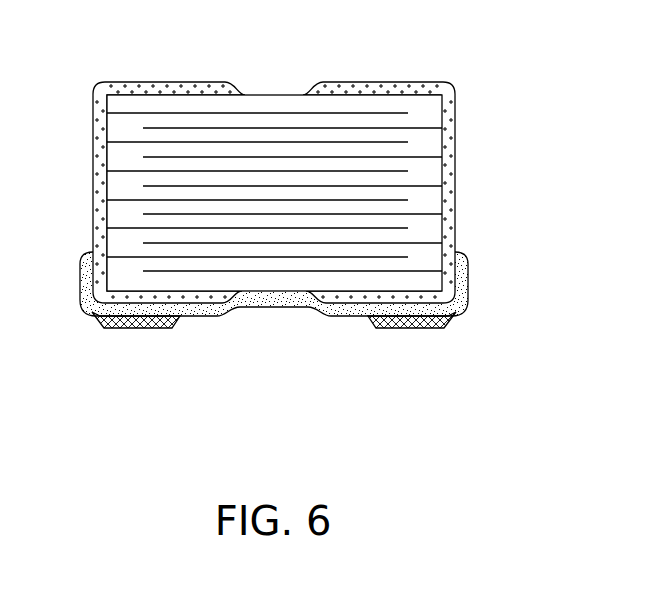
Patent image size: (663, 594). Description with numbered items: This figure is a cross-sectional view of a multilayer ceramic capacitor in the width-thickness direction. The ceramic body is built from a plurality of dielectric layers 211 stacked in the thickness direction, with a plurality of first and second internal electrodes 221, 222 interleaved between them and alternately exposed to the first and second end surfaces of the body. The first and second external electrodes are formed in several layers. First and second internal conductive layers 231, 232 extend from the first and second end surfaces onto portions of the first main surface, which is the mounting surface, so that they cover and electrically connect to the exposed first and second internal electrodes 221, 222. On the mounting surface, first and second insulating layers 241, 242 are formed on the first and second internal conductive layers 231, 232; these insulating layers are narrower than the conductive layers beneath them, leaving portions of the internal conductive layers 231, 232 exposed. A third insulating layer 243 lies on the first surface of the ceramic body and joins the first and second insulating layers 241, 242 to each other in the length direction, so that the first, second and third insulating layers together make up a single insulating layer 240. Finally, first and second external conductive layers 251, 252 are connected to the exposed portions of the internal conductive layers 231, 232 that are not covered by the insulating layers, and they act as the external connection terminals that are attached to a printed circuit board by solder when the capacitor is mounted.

The dielectric layer 211 is at (430, 198).
The first internal electrode 221 is at (248, 112).
The second internal electrode 222 is at (330, 125).
The first internal conductive layer 231 is at (167, 92).
The second internal conductive layer 232 is at (448, 143).
The single insulating layer 240 is at (286, 361).
The first insulating layer 241 is at (84, 275).
The second insulating layer 242 is at (406, 332).
The third insulating layer 243 is at (272, 307).
The first external conductive layer 251 is at (153, 318).
The second external conductive layer 252 is at (385, 318).